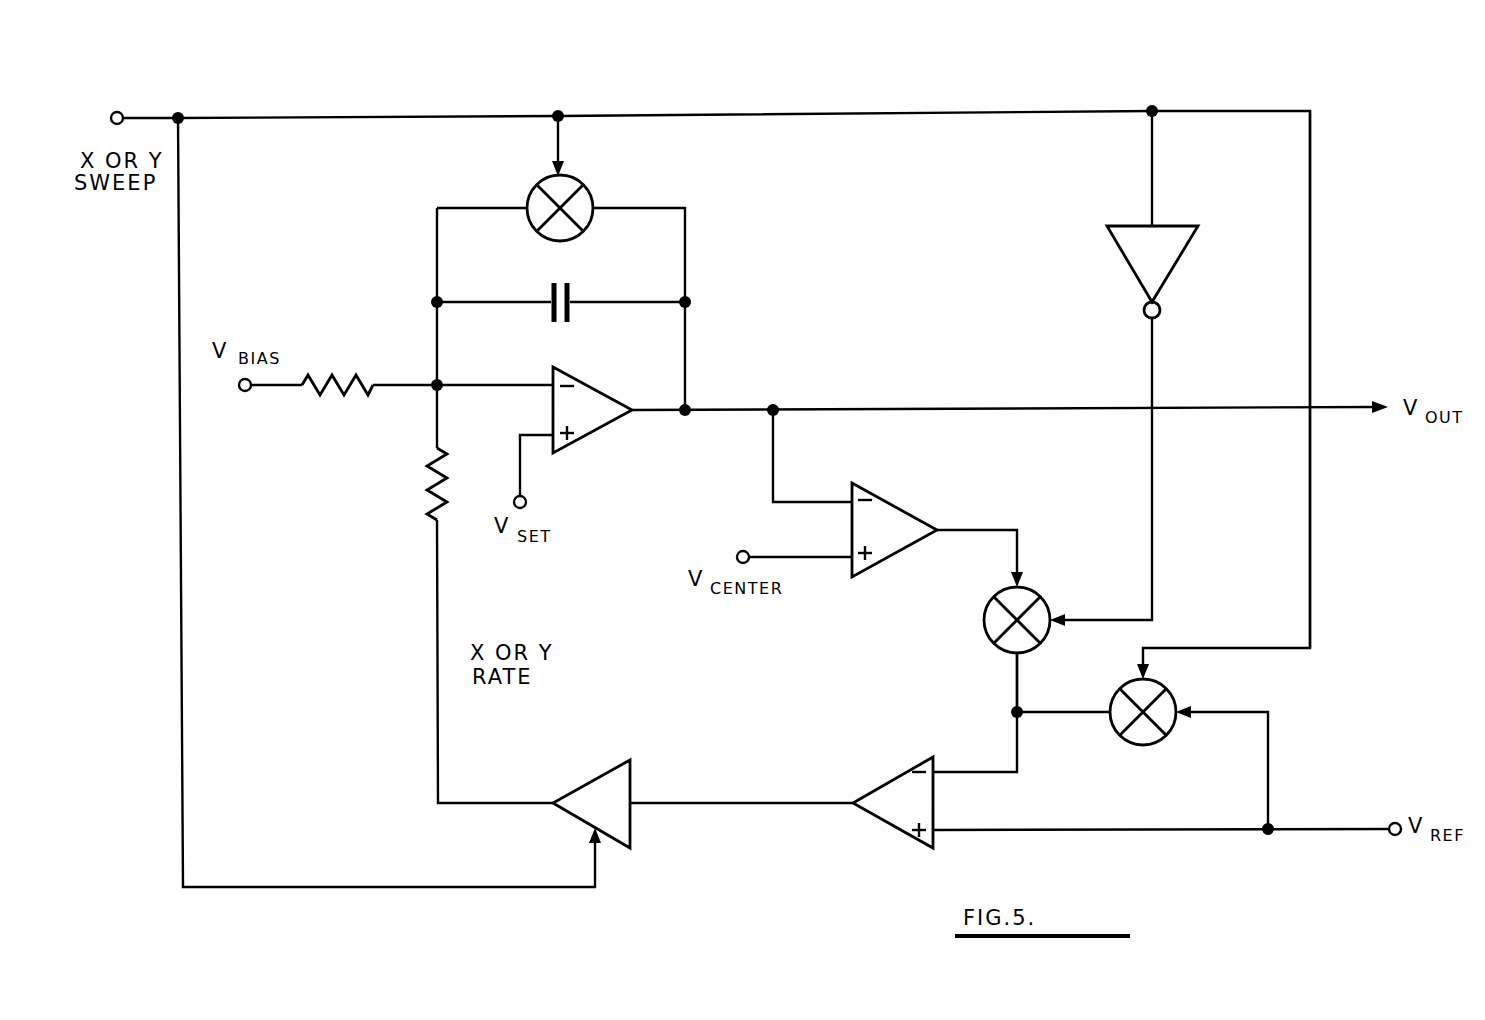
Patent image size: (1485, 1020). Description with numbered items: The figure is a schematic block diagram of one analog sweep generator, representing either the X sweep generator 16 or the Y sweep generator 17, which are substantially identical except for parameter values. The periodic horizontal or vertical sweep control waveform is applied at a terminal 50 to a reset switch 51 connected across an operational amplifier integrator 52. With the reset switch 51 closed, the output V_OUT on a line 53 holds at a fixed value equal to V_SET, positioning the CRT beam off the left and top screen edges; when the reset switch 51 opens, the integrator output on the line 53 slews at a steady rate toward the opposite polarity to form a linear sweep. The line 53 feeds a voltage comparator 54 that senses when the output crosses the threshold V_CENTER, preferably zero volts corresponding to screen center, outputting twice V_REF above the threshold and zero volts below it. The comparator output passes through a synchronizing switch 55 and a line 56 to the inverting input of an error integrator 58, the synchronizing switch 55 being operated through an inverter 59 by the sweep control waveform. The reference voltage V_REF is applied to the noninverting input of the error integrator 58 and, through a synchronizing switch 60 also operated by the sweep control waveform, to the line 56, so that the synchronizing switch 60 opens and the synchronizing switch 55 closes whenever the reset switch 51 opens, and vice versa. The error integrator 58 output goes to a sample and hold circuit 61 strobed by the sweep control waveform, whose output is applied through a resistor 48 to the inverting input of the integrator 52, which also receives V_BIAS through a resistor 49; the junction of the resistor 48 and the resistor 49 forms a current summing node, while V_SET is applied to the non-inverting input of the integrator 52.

The X sweep generator 16 is at (1357, 84).
The Y sweep generator 17 is at (1447, 84).
The resistor 48 is at (436, 490).
The resistor 49 is at (343, 378).
The terminal 50 is at (123, 112).
The reset switch 51 is at (533, 190).
The operational amplifier integrator 52 is at (642, 356).
The line 53 is at (731, 408).
The voltage comparator 54 is at (890, 503).
The synchronizing switch 55 is at (1046, 603).
The line 56 is at (1014, 689).
The error integrator 58 is at (897, 781).
The inverter 59 is at (1122, 265).
The synchronizing switch 60 is at (1143, 746).
The sample and hold circuit 61 is at (631, 778).